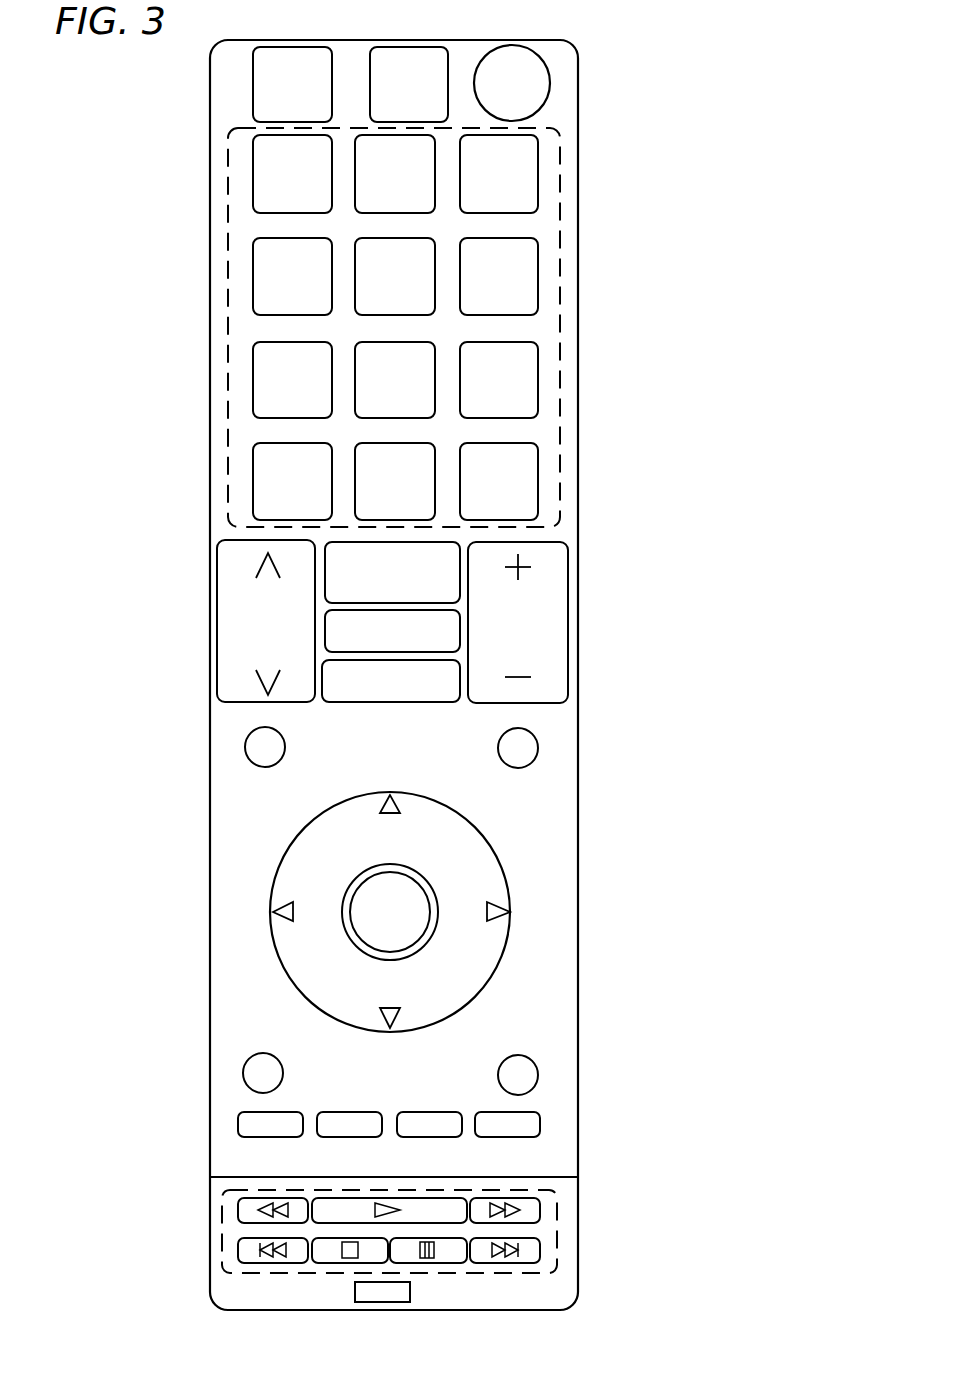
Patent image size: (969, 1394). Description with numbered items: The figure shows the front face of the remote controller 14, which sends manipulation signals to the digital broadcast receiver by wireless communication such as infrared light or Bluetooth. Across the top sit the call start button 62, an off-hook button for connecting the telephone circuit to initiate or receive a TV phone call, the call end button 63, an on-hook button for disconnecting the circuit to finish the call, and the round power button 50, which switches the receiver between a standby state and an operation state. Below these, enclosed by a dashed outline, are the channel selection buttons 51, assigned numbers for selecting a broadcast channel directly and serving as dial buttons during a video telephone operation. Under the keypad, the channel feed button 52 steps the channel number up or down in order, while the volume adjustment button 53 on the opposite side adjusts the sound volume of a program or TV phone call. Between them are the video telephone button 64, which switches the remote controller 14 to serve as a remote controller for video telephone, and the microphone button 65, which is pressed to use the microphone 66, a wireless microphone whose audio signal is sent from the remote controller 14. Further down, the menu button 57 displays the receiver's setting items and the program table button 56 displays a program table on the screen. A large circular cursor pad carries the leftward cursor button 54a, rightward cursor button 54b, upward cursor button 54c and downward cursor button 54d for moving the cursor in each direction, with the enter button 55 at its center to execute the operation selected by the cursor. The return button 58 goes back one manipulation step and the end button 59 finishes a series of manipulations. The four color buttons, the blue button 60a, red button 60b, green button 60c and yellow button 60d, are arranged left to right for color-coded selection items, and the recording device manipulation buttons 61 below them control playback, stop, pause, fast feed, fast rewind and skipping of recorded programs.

The remote controller 14 is at (553, 40).
The power button 50 is at (548, 88).
The channel selection buttons 51 is at (562, 175).
The channel feed button 52 is at (217, 648).
The volume adjustment button 53 is at (568, 583).
The leftward cursor button 54a is at (273, 912).
The rightward cursor button 54b is at (510, 912).
The upward cursor button 54c is at (385, 795).
The downward cursor button 54d is at (385, 1028).
The enter button 55 is at (438, 885).
The program table button 56 is at (540, 748).
The menu button 57 is at (245, 747).
The return button 58 is at (243, 1073).
The end button 59 is at (538, 1075).
The blue button 60a is at (238, 1125).
The red button 60b is at (350, 1108).
The green button 60c is at (445, 1108).
The yellow button 60d is at (540, 1125).
The recording device manipulation buttons 61 is at (557, 1222).
The call start button 62 is at (253, 85).
The call end button 63 is at (445, 62).
The video telephone button 64 is at (325, 575).
The microphone button 65 is at (385, 703).
The microphone 66 is at (410, 1288).